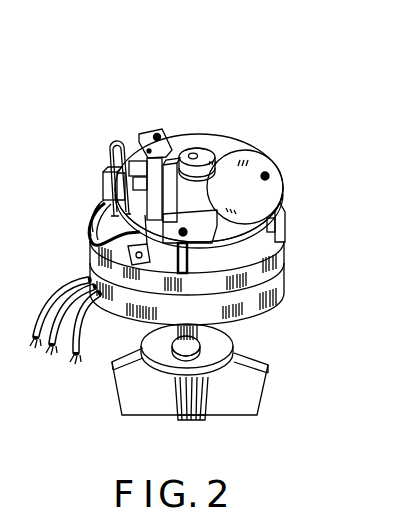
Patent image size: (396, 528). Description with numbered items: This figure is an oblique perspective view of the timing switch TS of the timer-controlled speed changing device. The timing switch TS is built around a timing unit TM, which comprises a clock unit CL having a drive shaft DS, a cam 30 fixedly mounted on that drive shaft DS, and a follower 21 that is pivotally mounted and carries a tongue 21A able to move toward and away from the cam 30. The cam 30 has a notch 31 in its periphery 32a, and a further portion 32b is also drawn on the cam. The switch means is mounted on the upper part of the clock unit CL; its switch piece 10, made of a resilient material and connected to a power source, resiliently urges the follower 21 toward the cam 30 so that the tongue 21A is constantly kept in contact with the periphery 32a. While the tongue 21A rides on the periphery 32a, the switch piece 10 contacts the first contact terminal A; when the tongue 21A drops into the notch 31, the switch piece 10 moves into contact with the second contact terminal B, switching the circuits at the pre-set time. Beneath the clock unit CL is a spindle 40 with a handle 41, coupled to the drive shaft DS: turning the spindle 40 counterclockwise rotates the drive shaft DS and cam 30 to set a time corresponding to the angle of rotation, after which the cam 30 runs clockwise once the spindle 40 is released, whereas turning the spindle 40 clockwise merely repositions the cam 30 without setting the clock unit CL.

The switch piece 10 is at (119, 142).
The follower 21 is at (109, 165).
The tongue 21A is at (155, 165).
The bracket top plate 32b is at (168, 153).
The notch 31 is at (192, 148).
The drive shaft DS is at (222, 166).
The cam 30 is at (242, 166).
The timing unit TM is at (283, 178).
The timing switch TS is at (102, 165).
The first contact terminal A is at (102, 191).
The second contact terminal B is at (100, 244).
The periphery 32a is at (284, 216).
The clock unit CL is at (287, 266).
The handle 41 is at (252, 385).
The spindle 40 is at (200, 347).